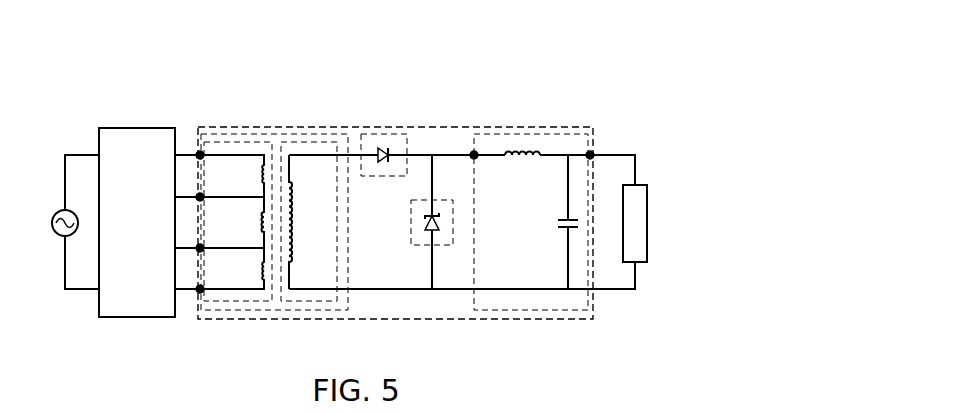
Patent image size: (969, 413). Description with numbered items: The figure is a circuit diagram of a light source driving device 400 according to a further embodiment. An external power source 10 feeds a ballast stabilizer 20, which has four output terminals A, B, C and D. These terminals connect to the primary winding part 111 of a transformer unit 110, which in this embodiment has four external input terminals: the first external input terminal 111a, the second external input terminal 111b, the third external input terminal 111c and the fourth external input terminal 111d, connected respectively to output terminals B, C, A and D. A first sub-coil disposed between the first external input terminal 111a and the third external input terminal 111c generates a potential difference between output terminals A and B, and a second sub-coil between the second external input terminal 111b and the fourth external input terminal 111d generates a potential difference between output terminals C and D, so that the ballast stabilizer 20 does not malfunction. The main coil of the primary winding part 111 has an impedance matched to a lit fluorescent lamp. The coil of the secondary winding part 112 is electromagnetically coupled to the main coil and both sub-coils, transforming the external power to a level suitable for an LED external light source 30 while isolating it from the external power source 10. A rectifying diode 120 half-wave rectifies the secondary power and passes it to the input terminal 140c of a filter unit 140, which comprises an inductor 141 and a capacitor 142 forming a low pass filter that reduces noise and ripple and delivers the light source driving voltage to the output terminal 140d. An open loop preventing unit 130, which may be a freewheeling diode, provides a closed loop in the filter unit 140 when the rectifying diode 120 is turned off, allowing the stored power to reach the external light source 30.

The external power source 10 is at (54, 212).
The ballast stabilizer 20 is at (107, 128).
The external light source 30 is at (640, 263).
The transformer unit 110 is at (287, 134).
The primary winding part 111 is at (253, 142).
The first external input terminal 111a is at (200, 197).
The second external input terminal 111b is at (200, 249).
The third external input terminal 111c is at (199, 128).
The fourth external input terminal 111d is at (200, 319).
The secondary winding part 112 is at (323, 142).
The rectifying diode 120 is at (388, 134).
The open loop preventing unit 130 is at (411, 222).
The filter unit 140 is at (536, 134).
The input terminal 140c is at (474, 153).
The output terminal 140d is at (592, 152).
The inductor 141 is at (523, 162).
The capacitor 142 is at (557, 224).
The light source driving device 400 is at (582, 127).